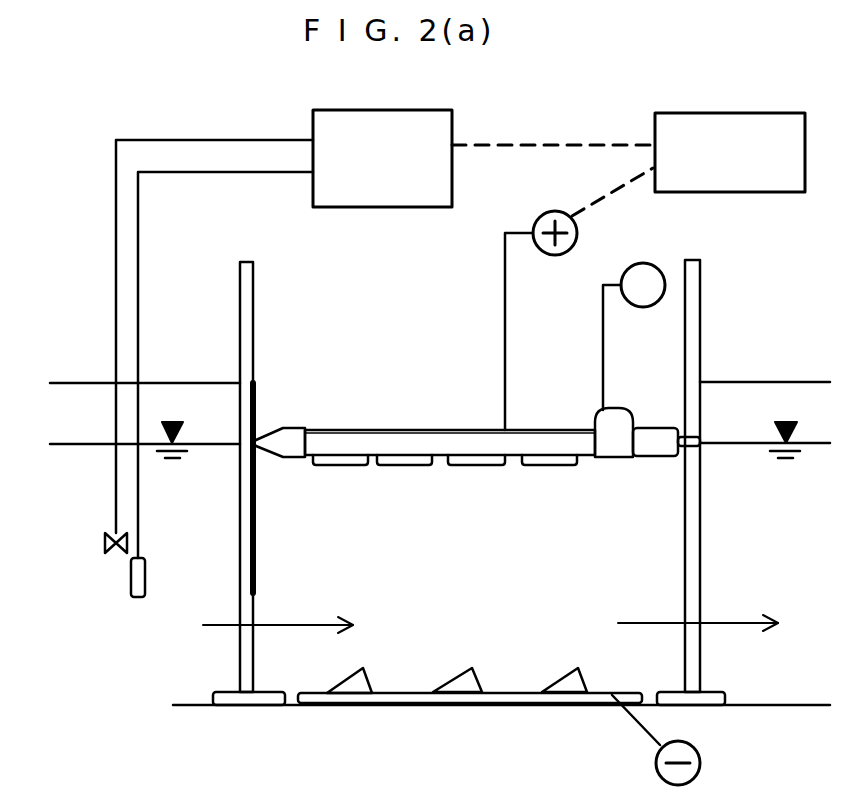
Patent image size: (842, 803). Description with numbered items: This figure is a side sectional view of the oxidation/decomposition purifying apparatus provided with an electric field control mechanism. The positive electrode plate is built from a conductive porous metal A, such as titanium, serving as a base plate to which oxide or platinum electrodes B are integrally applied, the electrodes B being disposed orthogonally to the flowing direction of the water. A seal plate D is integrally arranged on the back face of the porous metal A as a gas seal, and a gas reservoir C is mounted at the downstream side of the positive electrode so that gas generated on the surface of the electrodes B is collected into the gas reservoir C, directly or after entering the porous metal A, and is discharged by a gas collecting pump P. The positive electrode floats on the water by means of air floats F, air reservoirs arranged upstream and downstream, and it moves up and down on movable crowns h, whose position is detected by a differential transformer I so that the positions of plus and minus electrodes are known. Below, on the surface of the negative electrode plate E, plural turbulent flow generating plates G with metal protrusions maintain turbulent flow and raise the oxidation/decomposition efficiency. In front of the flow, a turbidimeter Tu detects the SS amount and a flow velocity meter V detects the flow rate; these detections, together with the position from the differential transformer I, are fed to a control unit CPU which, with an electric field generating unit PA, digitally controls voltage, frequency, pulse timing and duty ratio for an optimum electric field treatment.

The control unit CPU is at (382, 158).
The electric field generating unit PA is at (730, 152).
The gas collecting pump P is at (634, 336).
The flow velocity meter V is at (98, 550).
The turbidimeter Tu is at (137, 600).
The movable crown h is at (469, 481).
The differential transformer I is at (258, 396).
The air float F is at (477, 443).
The seal plate D is at (438, 430).
The gas reservoir C is at (614, 432).
The conductive porous metal A is at (418, 443).
The oxide electrode or platinum electrode B is at (472, 455).
The negative electrode plate E is at (470, 678).
The turbulent flow generating plate G is at (457, 660).